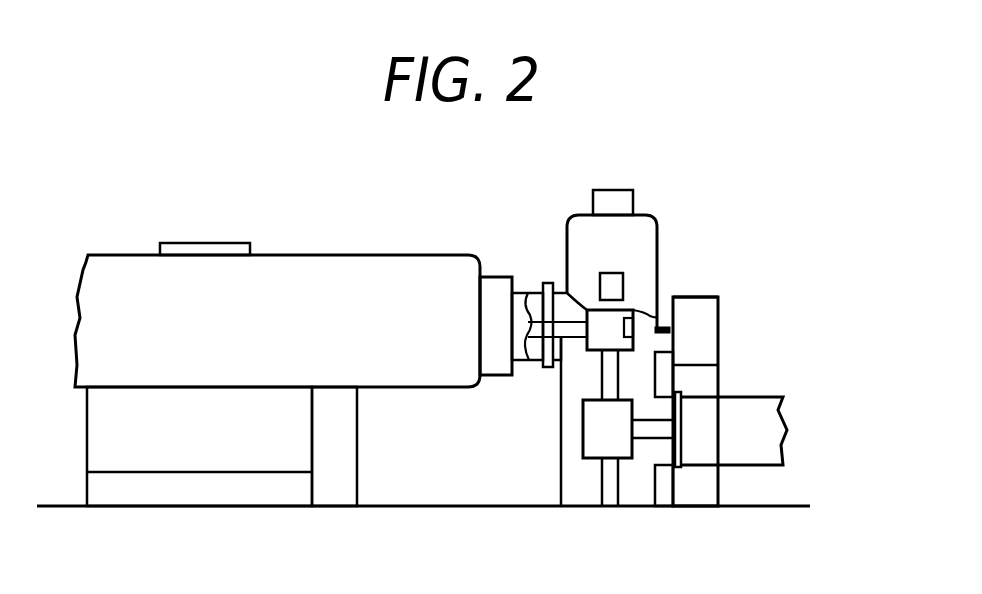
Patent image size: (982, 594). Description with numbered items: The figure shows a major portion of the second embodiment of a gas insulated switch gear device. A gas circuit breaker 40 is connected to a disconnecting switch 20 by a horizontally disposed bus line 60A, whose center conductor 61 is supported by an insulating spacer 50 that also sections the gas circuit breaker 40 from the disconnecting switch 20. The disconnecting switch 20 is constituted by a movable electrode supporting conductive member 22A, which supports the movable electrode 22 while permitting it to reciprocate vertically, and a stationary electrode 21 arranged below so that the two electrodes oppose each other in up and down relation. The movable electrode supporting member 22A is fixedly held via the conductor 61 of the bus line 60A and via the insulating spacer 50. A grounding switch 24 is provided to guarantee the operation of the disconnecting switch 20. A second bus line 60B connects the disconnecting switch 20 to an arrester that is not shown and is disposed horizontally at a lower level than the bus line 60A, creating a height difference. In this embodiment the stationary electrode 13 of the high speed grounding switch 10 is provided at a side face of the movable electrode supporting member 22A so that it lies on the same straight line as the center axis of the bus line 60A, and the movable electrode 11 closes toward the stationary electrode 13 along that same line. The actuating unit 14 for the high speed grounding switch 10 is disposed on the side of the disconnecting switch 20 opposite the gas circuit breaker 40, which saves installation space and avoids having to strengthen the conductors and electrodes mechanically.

The high speed grounding switch 10 is at (718, 297).
The movable electrode 11 is at (663, 320).
The stationary electrode 13 is at (633, 330).
The actuating unit 14 is at (705, 328).
The disconnecting switch 20 is at (652, 225).
The stationary electrode 21 is at (590, 438).
The movable electrode 22 is at (607, 380).
The movable electrode supporting conductive member 22A is at (597, 337).
The grounding switch 24 is at (612, 285).
The gas circuit breaker 40 is at (306, 263).
The insulating spacer 50 is at (548, 283).
The bus line 60A is at (560, 287).
The bus line 60B is at (763, 417).
The conductor 61 is at (533, 293).